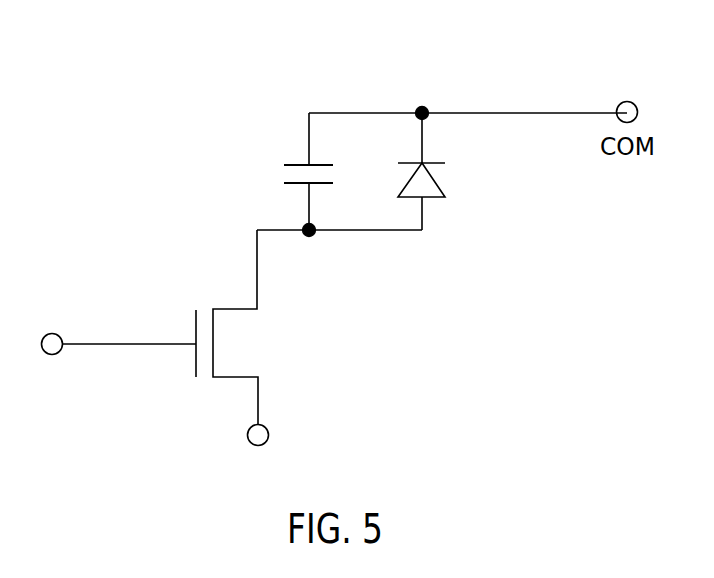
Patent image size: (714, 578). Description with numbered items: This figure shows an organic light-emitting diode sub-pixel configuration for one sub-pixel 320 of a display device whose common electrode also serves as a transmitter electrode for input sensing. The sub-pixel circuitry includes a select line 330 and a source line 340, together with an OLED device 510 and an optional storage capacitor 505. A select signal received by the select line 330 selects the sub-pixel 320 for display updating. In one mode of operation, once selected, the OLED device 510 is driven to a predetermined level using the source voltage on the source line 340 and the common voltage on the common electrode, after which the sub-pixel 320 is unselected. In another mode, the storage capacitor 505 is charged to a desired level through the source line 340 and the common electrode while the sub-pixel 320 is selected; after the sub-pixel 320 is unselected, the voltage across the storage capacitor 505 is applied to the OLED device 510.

The sub-pixel 320 is at (230, 137).
The storage capacitor 505 is at (252, 176).
The OLED device 510 is at (433, 177).
The select line 330 is at (114, 352).
The source line 340 is at (261, 454).